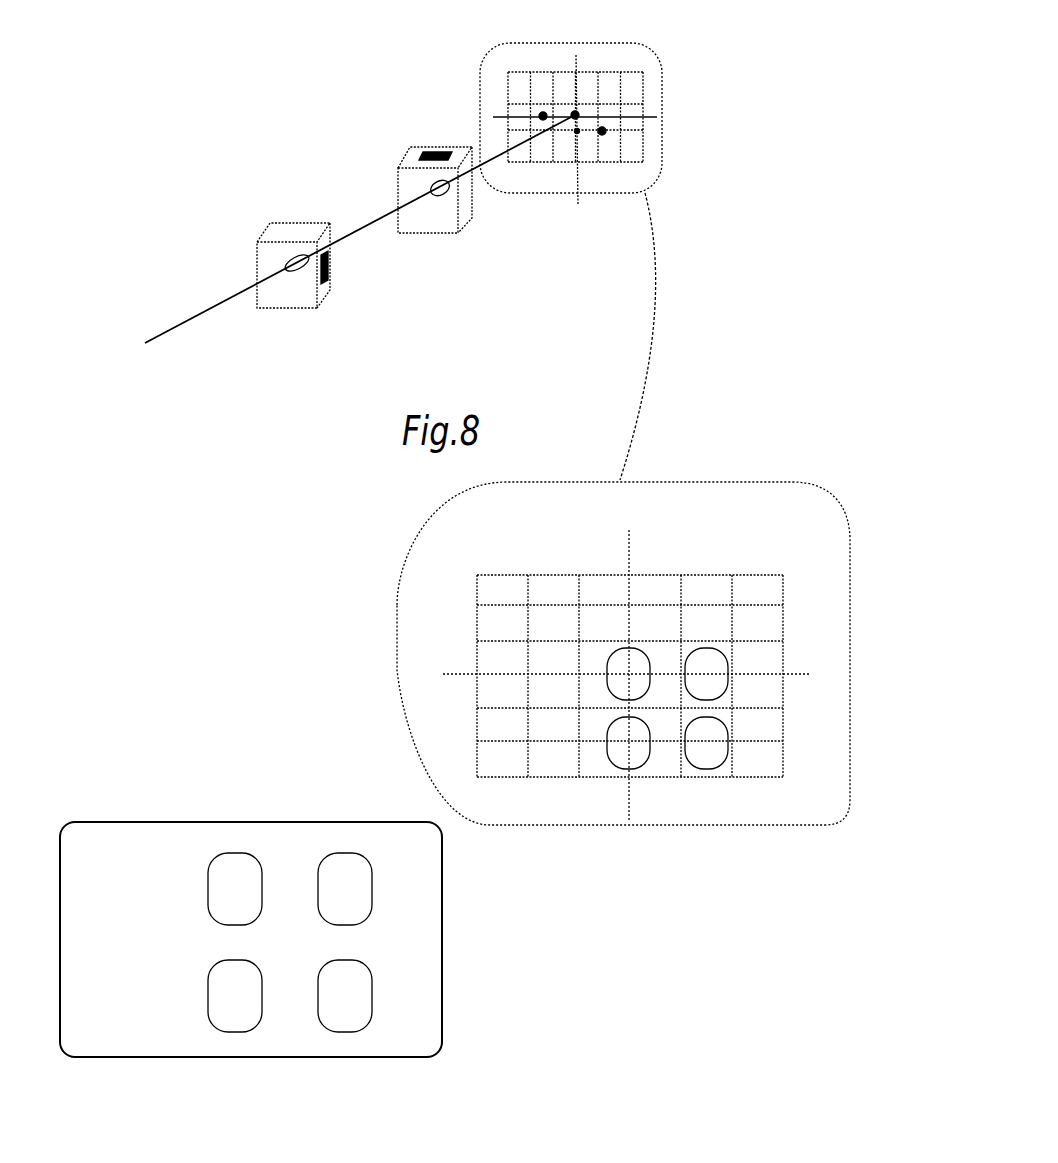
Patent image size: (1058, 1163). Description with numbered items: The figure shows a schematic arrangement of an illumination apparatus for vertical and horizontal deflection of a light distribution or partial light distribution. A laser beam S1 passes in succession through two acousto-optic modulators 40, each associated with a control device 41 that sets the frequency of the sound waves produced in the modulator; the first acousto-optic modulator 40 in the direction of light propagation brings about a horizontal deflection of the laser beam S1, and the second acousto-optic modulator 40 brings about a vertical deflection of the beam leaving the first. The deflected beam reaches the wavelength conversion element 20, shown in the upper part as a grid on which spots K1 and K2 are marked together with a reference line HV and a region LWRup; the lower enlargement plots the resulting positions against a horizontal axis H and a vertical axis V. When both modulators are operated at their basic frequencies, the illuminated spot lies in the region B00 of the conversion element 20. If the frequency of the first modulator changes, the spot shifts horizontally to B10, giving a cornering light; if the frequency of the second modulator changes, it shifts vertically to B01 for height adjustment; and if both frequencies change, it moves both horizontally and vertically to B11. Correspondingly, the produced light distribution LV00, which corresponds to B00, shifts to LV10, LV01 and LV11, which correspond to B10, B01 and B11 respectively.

The laser beam S1 is at (213, 320).
The acousto-optic modulator 40 is at (292, 320).
The control device 41 is at (336, 262).
The wavelength conversion element 20 is at (668, 93).
The beam spot position K1 is at (536, 113).
The beam spot position K2 is at (608, 134).
The upper light receiving region LWRup is at (575, 110).
The vertical reference line HV is at (601, 144).
The vertical axis V is at (629, 660).
The horizontal axis H is at (639, 679).
The light distribution LV00 is at (610, 652).
The horizontally shifted light distribution LV10 is at (698, 652).
The vertically shifted light distribution LV01 is at (613, 733).
The horizontally and vertically shifted light distribution LV11 is at (705, 755).
The illuminated region B00 is at (240, 882).
The horizontally shifted illuminated region B10 is at (336, 878).
The vertically shifted illuminated region B01 is at (232, 988).
The horizontally and vertically shifted illuminated region B11 is at (334, 982).